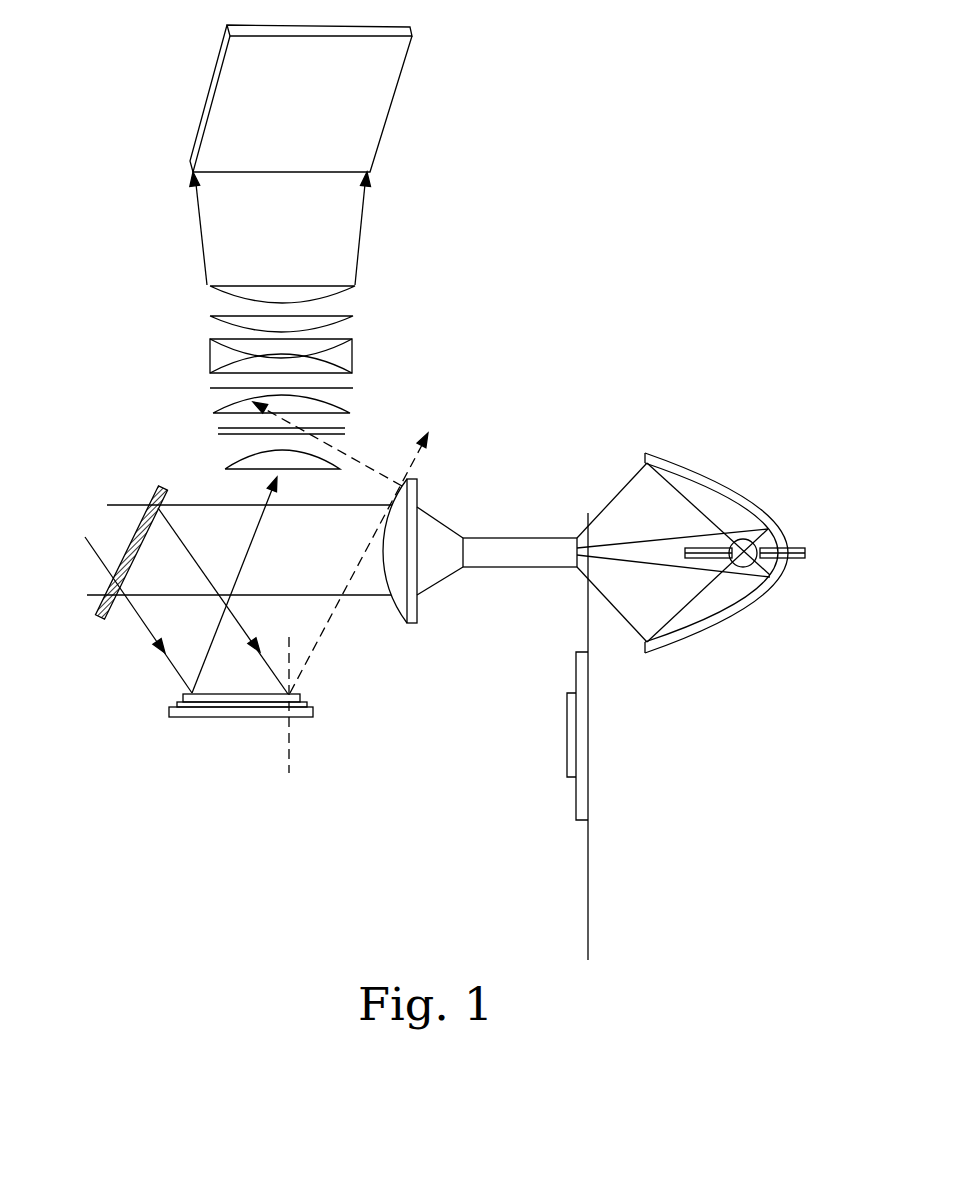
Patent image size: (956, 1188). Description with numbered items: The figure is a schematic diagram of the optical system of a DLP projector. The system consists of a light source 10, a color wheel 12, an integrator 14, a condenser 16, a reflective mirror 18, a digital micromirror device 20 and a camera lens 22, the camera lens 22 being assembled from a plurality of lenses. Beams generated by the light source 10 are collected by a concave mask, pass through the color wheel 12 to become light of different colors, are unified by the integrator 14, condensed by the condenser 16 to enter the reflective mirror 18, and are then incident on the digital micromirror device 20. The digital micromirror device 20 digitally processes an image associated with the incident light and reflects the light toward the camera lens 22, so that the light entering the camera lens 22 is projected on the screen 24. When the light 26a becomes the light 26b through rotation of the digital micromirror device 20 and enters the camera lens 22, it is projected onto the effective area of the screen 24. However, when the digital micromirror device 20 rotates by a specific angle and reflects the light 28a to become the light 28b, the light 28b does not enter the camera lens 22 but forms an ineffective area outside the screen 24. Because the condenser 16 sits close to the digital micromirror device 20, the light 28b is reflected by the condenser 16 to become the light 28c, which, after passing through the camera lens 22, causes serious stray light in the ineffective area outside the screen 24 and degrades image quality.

The light source 10 is at (757, 570).
The color wheel 12 is at (588, 872).
The integrator 14 is at (500, 547).
The condenser 16 is at (401, 606).
The reflective mirror 18 is at (132, 542).
The digital micromirror device 20 is at (242, 717).
The camera lens 22 is at (198, 286).
The screen 24 is at (388, 108).
The light 26a is at (142, 628).
The light 26b is at (200, 678).
The light 28a is at (148, 490).
The light 28b is at (421, 453).
The light 28c is at (353, 455).